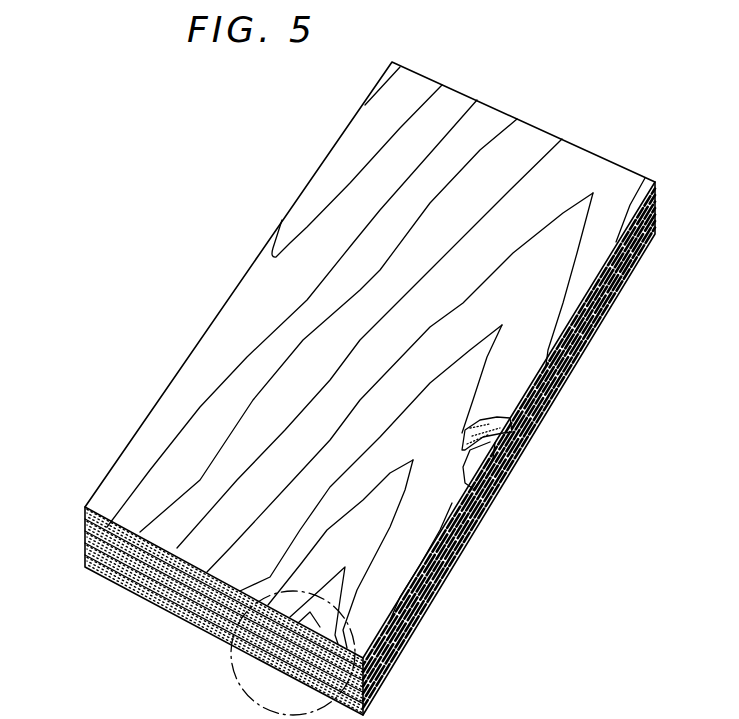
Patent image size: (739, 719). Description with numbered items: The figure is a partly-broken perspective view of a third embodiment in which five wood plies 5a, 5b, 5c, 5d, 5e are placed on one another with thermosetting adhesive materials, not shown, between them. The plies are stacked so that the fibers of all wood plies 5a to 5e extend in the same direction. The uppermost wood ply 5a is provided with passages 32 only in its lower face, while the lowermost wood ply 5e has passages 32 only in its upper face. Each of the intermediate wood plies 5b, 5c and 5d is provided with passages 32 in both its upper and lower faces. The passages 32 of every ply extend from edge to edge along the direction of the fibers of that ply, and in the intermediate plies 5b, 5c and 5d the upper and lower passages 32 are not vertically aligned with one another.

The uppermost wood ply 5a is at (88, 512).
The intermediate wood ply 5b is at (90, 528).
The intermediate wood ply 5c is at (117, 557).
The intermediate wood ply 5d is at (152, 590).
The lowermost wood ply 5e is at (193, 627).
The passages 32 is at (523, 453).